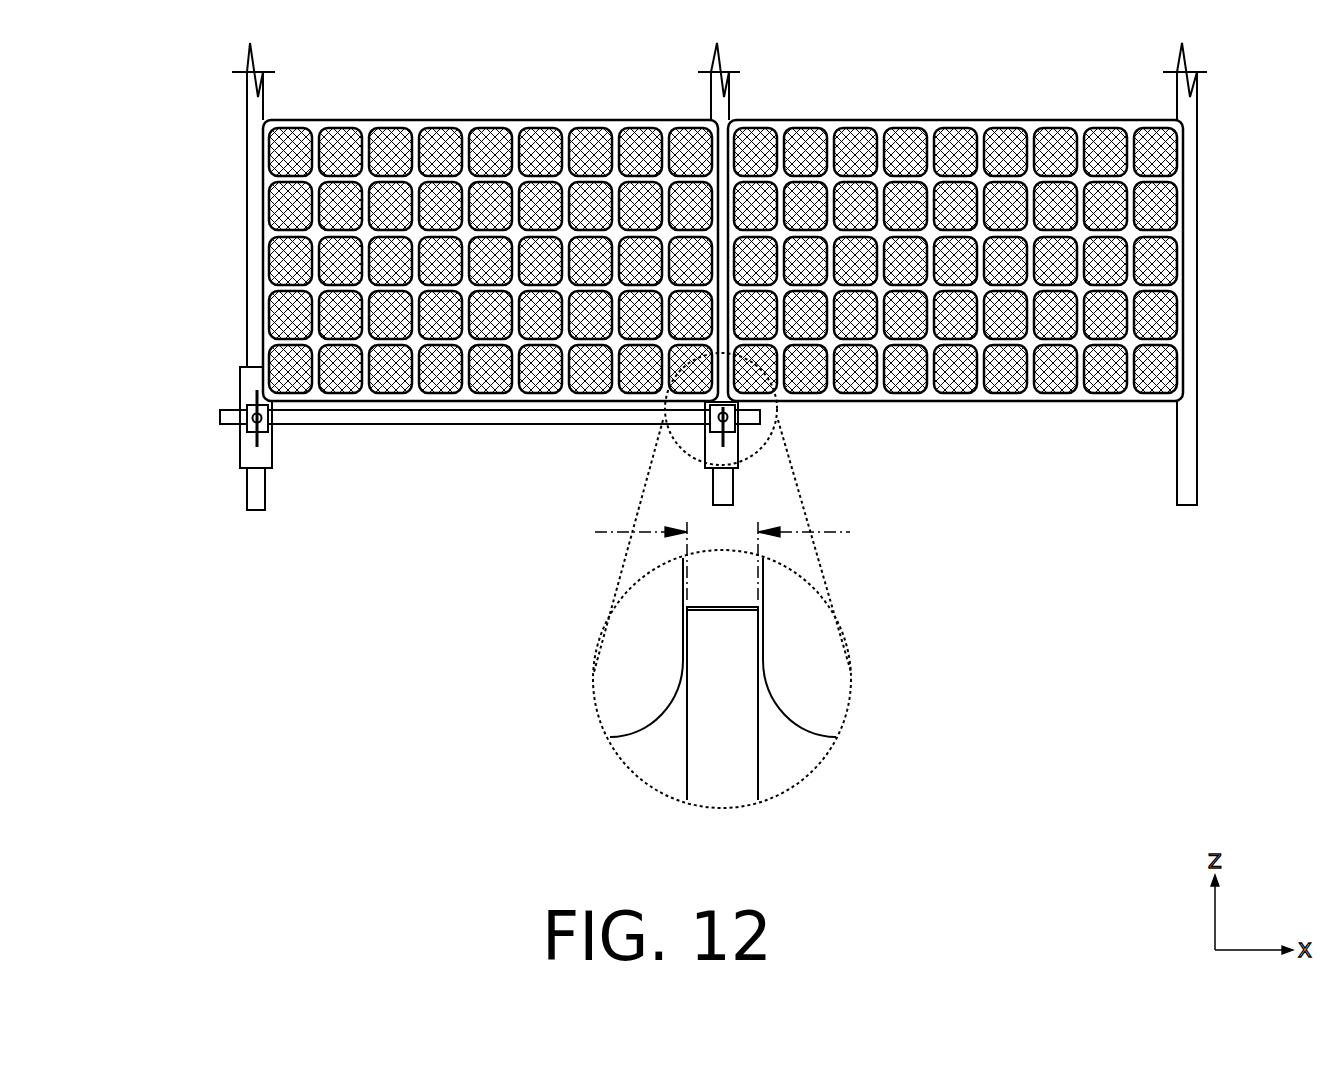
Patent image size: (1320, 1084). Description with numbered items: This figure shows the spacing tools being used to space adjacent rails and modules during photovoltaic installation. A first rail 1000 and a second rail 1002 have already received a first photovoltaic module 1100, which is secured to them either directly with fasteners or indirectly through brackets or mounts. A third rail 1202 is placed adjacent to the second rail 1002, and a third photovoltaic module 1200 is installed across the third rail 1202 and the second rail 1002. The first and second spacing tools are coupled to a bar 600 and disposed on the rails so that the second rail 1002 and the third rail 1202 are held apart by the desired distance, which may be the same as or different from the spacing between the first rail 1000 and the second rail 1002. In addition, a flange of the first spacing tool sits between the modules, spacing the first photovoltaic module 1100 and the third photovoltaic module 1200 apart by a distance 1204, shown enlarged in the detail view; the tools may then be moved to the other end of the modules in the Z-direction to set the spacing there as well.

The third rail 1202 is at (257, 112).
The second rail 1002 is at (727, 112).
The first rail 1000 is at (1190, 108).
The third photovoltaic module 1200 is at (517, 120).
The first photovoltaic module 1100 is at (968, 120).
The bar 600 is at (463, 425).
The distance 1204 is at (751, 561).